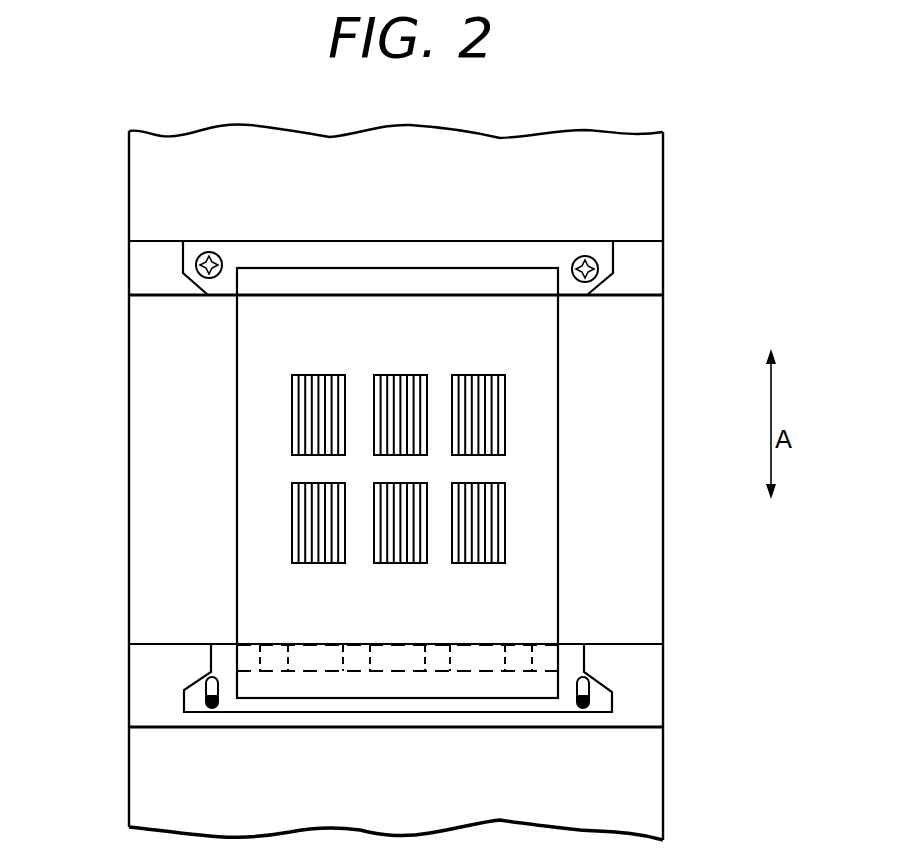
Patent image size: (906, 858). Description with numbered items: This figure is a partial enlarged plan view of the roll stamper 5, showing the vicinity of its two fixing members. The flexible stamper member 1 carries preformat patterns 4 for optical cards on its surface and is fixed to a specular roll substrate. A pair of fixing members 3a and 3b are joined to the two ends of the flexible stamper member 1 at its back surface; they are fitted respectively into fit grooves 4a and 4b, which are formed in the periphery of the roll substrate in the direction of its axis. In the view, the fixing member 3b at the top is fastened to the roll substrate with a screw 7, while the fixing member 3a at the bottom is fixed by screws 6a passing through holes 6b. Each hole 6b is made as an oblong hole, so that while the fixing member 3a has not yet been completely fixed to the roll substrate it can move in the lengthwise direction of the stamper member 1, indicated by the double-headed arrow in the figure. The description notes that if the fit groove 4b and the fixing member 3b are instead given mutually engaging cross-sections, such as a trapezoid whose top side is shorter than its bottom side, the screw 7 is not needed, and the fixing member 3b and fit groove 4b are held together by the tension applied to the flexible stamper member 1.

The roll stamper 5 is at (582, 124).
The screw 7 is at (208, 251).
The fixing member 3b is at (626, 267).
The fit groove 4b is at (152, 268).
The flexible stamper member 1 is at (524, 339).
The preformat patterns 4 is at (505, 397).
The fit groove 4a is at (155, 672).
The fixing member 3a is at (630, 703).
The screw 6a is at (216, 712).
The hole 6b is at (206, 690).